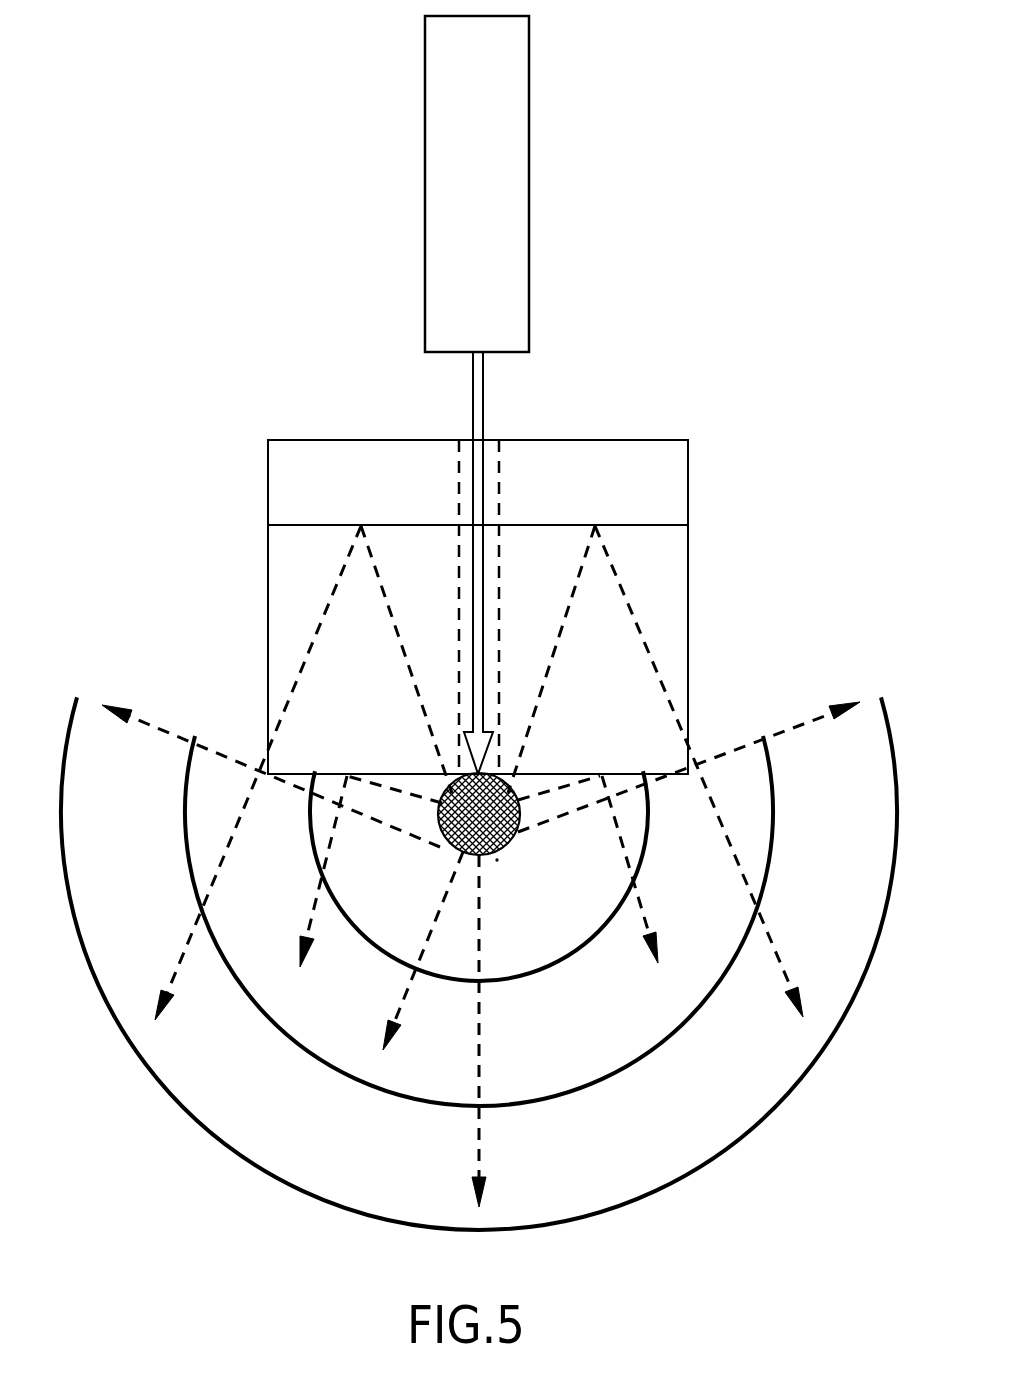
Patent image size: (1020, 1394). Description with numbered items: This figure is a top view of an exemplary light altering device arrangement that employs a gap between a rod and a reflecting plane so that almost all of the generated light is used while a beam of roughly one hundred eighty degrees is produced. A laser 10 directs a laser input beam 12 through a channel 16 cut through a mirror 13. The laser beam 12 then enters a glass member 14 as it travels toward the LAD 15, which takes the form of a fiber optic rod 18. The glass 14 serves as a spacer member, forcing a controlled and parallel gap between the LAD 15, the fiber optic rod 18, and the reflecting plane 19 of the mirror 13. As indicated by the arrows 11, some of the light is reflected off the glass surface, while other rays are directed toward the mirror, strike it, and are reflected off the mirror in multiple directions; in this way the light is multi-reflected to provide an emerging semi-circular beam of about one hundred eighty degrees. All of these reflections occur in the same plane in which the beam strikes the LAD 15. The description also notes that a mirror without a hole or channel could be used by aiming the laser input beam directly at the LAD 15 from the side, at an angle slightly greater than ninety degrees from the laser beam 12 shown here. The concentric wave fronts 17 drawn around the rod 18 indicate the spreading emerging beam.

The laser 10 is at (424, 167).
The arrows 11 is at (160, 730).
The laser input beam 12 is at (485, 416).
The mirror 13 is at (688, 480).
The glass member 14 is at (688, 672).
The LAD 15 is at (505, 887).
The channel 16 is at (457, 483).
The wave fronts 17 is at (533, 973).
The fiber optic rod 18 is at (455, 855).
The reflecting plane 19 is at (308, 527).